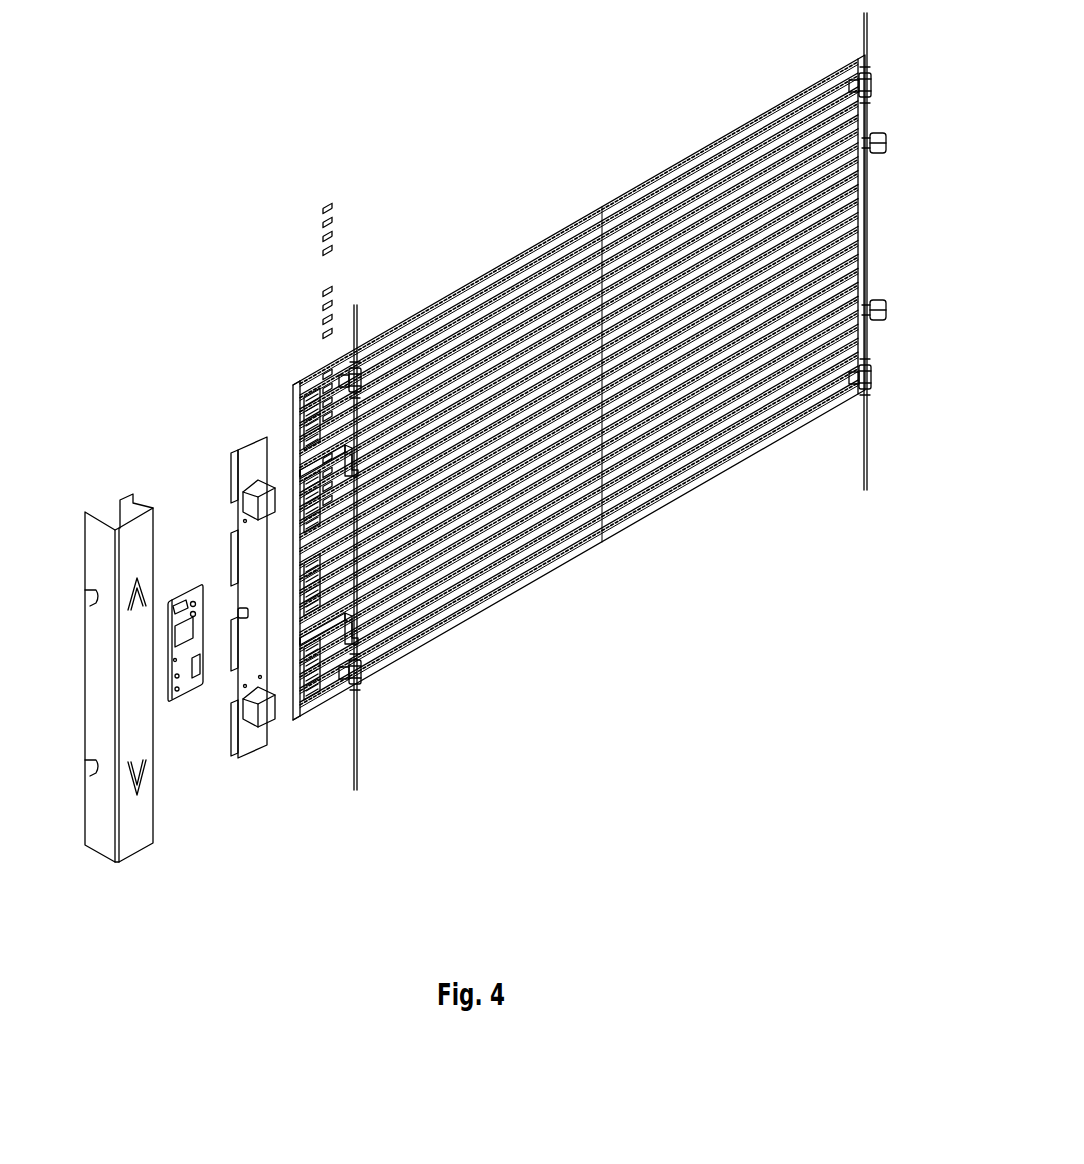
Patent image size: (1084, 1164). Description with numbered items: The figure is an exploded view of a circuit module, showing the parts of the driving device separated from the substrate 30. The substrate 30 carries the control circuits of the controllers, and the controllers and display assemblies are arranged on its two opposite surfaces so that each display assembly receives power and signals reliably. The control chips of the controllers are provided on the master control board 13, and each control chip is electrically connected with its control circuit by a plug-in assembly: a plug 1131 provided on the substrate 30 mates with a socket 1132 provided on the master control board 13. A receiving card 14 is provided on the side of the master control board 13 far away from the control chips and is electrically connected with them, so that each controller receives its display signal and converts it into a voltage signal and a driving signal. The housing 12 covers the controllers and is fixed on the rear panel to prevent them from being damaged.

The housing 12 is at (100, 812).
The master control board 13 is at (249, 738).
The receiving card 14 is at (197, 595).
The substrate 30 is at (525, 548).
The plug 1131 is at (306, 402).
The socket 1132 is at (237, 452).